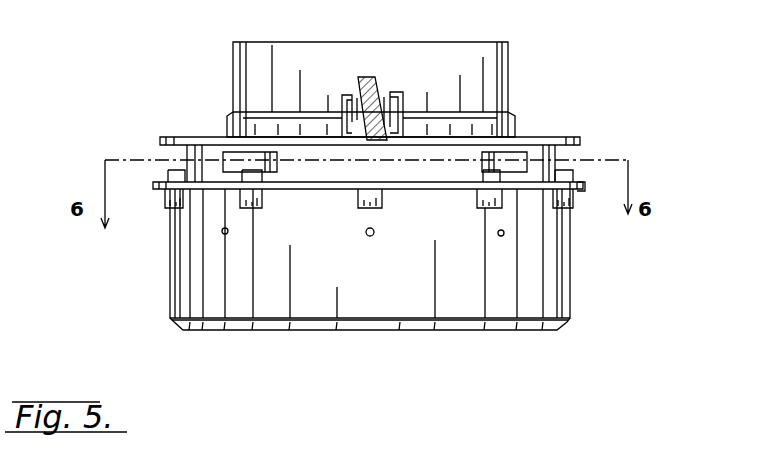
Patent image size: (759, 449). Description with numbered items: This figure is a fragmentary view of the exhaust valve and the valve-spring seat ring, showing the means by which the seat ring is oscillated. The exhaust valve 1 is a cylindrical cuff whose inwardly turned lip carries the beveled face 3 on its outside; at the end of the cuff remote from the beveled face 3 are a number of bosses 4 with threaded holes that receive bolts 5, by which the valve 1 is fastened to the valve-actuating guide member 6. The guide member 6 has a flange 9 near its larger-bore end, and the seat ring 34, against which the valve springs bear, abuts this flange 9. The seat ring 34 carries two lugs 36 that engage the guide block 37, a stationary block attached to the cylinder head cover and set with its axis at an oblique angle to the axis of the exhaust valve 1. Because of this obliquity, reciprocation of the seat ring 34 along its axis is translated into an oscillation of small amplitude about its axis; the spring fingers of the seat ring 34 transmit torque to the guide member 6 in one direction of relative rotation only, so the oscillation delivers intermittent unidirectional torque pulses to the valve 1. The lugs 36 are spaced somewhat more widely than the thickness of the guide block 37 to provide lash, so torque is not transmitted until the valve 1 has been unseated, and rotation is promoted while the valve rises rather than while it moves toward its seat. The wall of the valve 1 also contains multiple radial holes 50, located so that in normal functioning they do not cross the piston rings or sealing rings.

The exhaust valve 1 is at (552, 283).
The beveled face 3 is at (180, 325).
The bosses 4 is at (243, 195).
The bolts 5 is at (575, 172).
The valve-actuating guide member 6 is at (498, 73).
The flange 9 is at (584, 191).
The seat ring 34 is at (160, 141).
The lugs 36 is at (356, 100).
The guide block 37 is at (365, 77).
The holes 50 is at (222, 233).